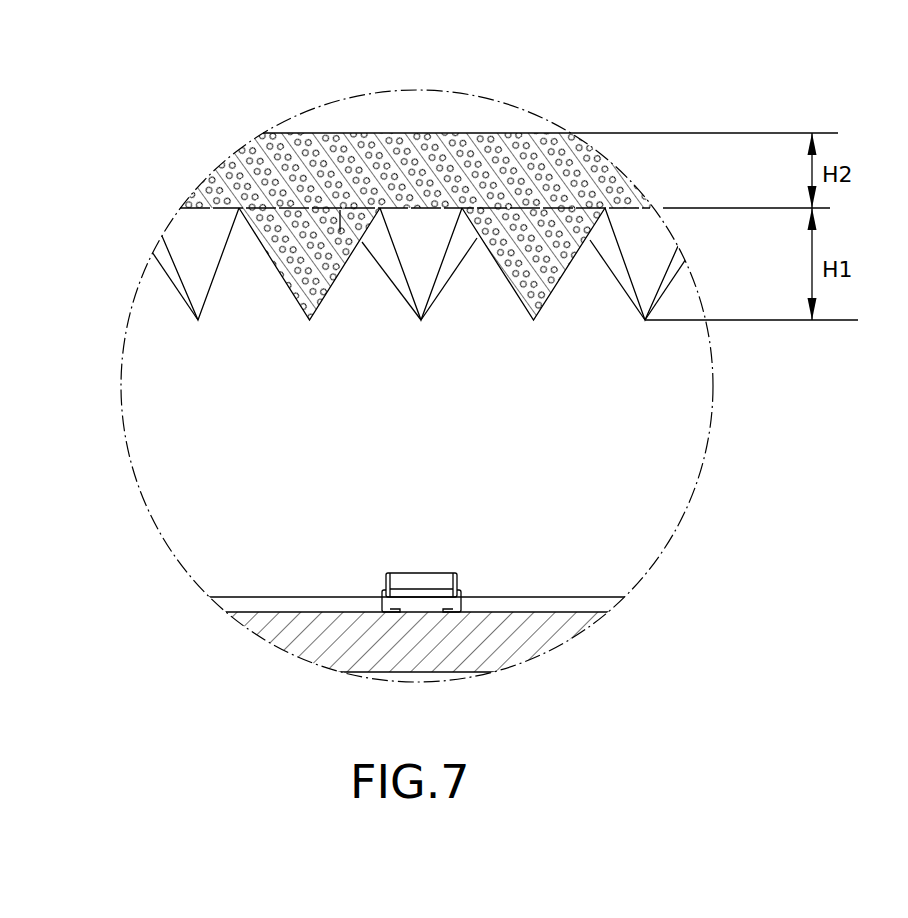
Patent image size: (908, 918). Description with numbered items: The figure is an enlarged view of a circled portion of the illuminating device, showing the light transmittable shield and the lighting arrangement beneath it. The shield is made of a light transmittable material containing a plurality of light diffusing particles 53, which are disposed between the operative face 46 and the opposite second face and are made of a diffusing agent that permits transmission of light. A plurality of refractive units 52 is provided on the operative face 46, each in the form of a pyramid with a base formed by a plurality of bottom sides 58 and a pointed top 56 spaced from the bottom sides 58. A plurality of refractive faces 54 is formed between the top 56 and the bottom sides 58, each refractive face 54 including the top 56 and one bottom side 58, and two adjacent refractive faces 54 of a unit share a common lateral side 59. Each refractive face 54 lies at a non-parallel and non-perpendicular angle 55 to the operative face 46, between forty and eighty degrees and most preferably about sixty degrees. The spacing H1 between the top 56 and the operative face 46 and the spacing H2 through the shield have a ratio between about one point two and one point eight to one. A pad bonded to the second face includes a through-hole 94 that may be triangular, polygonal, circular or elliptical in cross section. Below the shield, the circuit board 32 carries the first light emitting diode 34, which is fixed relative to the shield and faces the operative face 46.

The circuit board 32 is at (502, 642).
The first light emitting diode 34 is at (407, 573).
The operative face 46 is at (542, 247).
The refractive unit 52 is at (293, 273).
The light diffusing particle 53 is at (510, 167).
The refractive face 54 is at (583, 372).
The non-parallel and non-perpendicular angle 55 is at (343, 230).
The top 56 is at (310, 321).
The bottom side 58 is at (448, 208).
The common lateral side 59 is at (398, 247).
The through-hole 94 is at (350, 118).